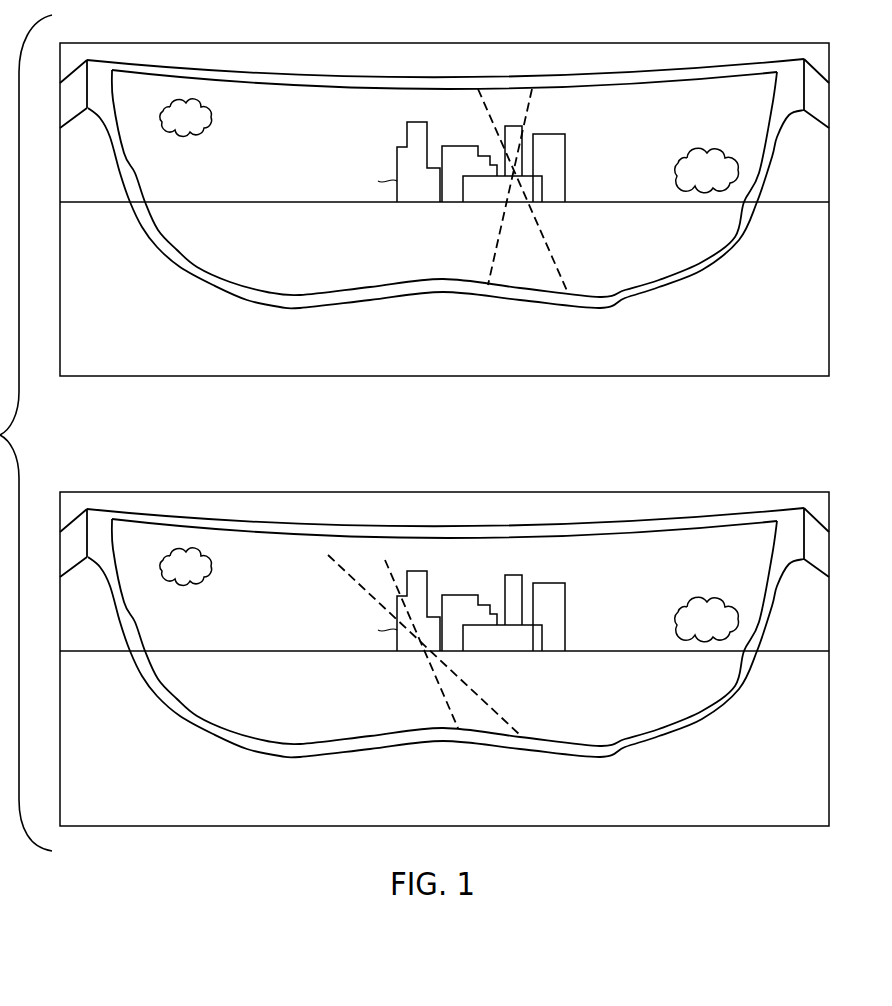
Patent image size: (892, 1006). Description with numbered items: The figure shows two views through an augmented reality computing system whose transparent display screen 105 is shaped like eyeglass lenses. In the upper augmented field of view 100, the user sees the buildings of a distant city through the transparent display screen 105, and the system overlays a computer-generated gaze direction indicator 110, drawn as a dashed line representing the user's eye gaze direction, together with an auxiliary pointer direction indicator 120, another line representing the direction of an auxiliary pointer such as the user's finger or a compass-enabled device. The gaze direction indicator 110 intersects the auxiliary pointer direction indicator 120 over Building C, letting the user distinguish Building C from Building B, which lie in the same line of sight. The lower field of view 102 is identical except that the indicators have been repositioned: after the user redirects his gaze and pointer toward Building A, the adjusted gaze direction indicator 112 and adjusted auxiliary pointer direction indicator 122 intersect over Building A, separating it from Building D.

The augmented field of view 100 is at (126, 356).
The field of view 102 is at (126, 806).
The transparent display screen 105 is at (310, 309).
The gaze direction indicator 110 is at (493, 248).
The auxiliary pointer direction indicator 120 is at (550, 252).
The gaze direction indicator 112 is at (445, 697).
The auxiliary pointer direction indicator 122 is at (482, 698).